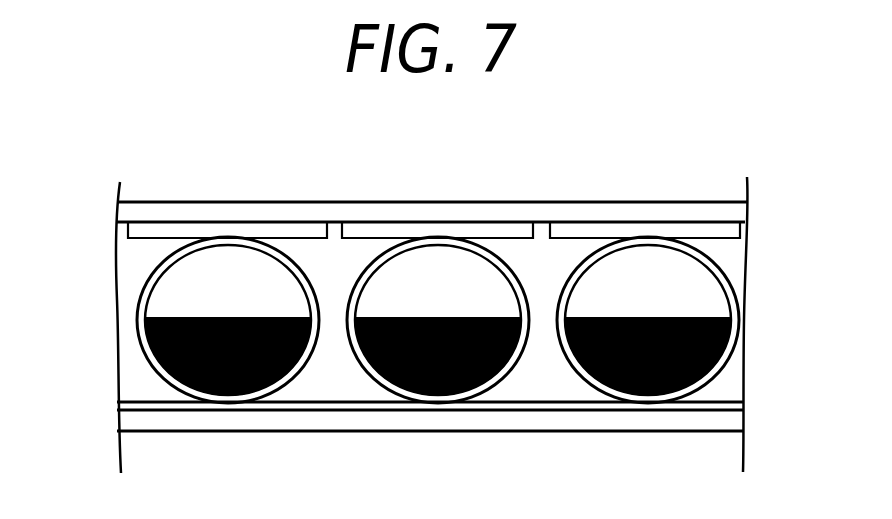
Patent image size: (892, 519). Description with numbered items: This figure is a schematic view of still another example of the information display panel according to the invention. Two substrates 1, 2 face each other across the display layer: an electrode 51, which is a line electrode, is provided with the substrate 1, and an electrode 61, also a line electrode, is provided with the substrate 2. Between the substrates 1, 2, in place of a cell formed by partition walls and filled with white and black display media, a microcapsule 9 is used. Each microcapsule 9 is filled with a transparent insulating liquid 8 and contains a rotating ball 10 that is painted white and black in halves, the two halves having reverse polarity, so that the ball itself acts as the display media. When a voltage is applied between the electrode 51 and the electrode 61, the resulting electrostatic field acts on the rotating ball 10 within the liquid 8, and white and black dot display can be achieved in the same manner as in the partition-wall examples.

The substrate 1 is at (598, 422).
The substrate 2 is at (477, 210).
The electrode 51 is at (513, 405).
The electrode 61 is at (644, 231).
The transparent insulating liquid 8 is at (143, 352).
The microcapsule 9 is at (295, 373).
The rotating ball 10 is at (186, 292).